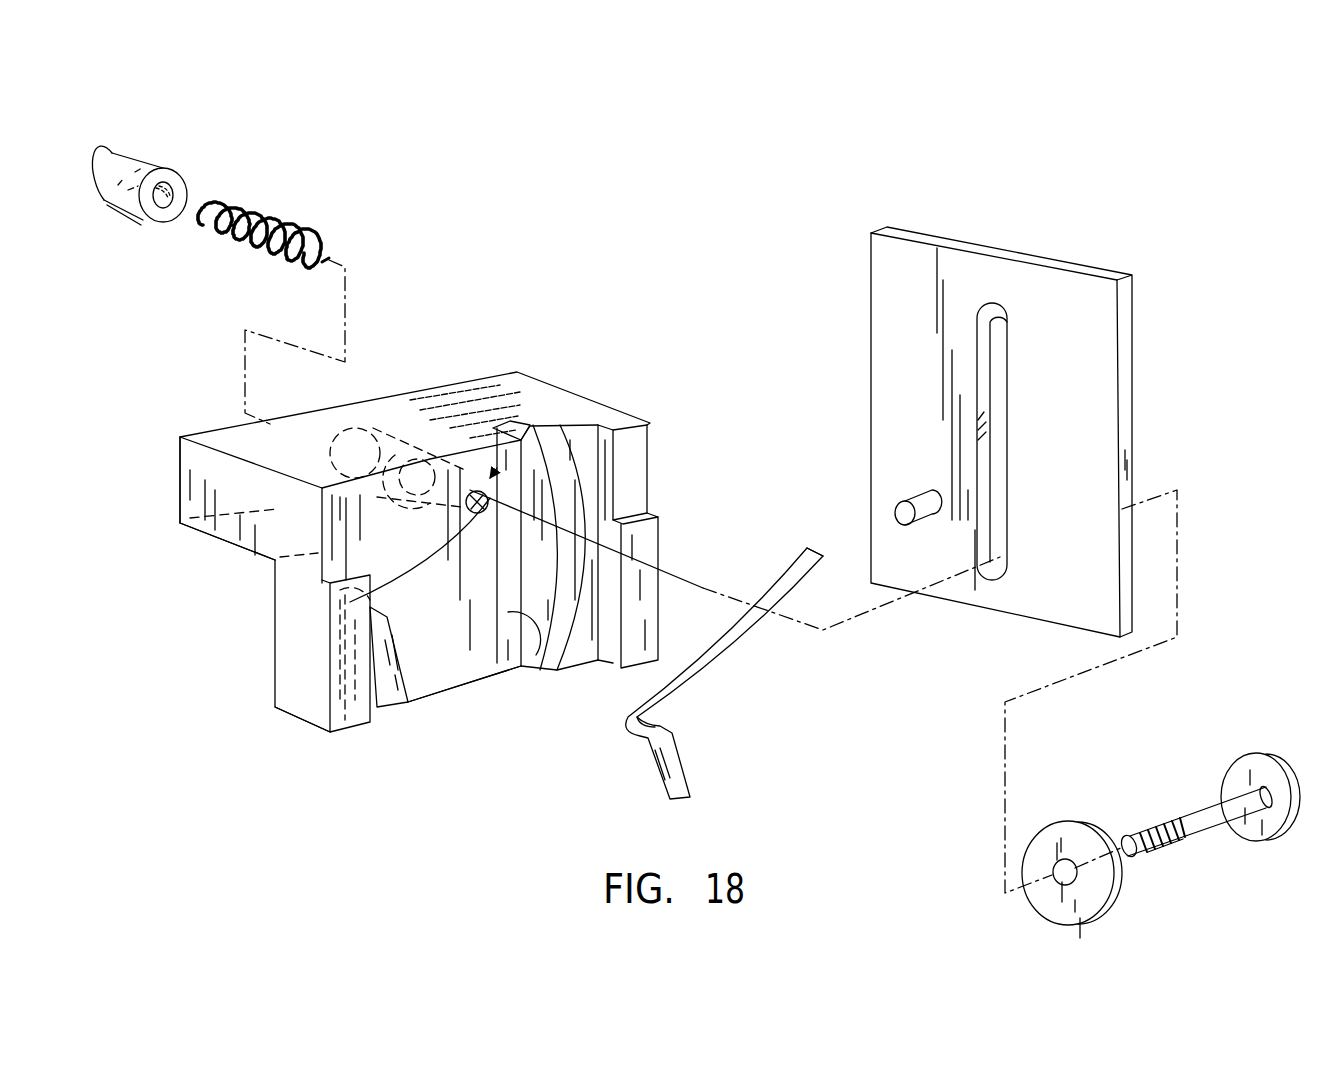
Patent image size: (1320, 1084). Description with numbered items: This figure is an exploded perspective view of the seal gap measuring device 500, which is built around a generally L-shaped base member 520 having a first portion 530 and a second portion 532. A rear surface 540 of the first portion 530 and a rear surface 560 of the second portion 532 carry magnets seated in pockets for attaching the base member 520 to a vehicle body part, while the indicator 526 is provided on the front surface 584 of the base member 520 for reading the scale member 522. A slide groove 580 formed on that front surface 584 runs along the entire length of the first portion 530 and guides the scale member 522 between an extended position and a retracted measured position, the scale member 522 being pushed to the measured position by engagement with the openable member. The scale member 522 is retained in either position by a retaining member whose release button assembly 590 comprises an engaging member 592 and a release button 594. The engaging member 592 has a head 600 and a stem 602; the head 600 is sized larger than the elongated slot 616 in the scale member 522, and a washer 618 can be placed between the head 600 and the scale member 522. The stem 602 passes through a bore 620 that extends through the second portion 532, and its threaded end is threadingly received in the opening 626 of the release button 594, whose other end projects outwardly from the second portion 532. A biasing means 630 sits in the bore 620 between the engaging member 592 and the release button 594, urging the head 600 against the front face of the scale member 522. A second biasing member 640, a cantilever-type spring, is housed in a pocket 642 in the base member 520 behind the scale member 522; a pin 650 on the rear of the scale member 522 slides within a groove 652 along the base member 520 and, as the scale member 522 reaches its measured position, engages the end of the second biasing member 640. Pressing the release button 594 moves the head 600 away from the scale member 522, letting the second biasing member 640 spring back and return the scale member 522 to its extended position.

The device 500 is at (788, 192).
The base member 520 is at (602, 400).
The scale member 522 is at (1135, 302).
The indicator 526 is at (645, 512).
The first portion 530 is at (298, 687).
The second portion 532 is at (195, 497).
The rear surface 540 is at (272, 648).
The rear surface 560 is at (220, 545).
The slide groove 580 is at (386, 712).
The front surface 584 is at (651, 535).
The release button assembly 590 is at (218, 168).
The engaging member 592 is at (1211, 840).
The release button 594 is at (138, 160).
The head 600 is at (1277, 765).
The stem 602 is at (1197, 813).
The elongated slot 616 is at (998, 330).
The washer 618 is at (1077, 847).
The bore 620 is at (472, 494).
The opening 626 is at (163, 208).
The biasing means 630 is at (285, 222).
The second biasing member 640 is at (713, 677).
The pocket 642 is at (435, 663).
The pin 650 is at (921, 503).
The groove 652 is at (540, 652).